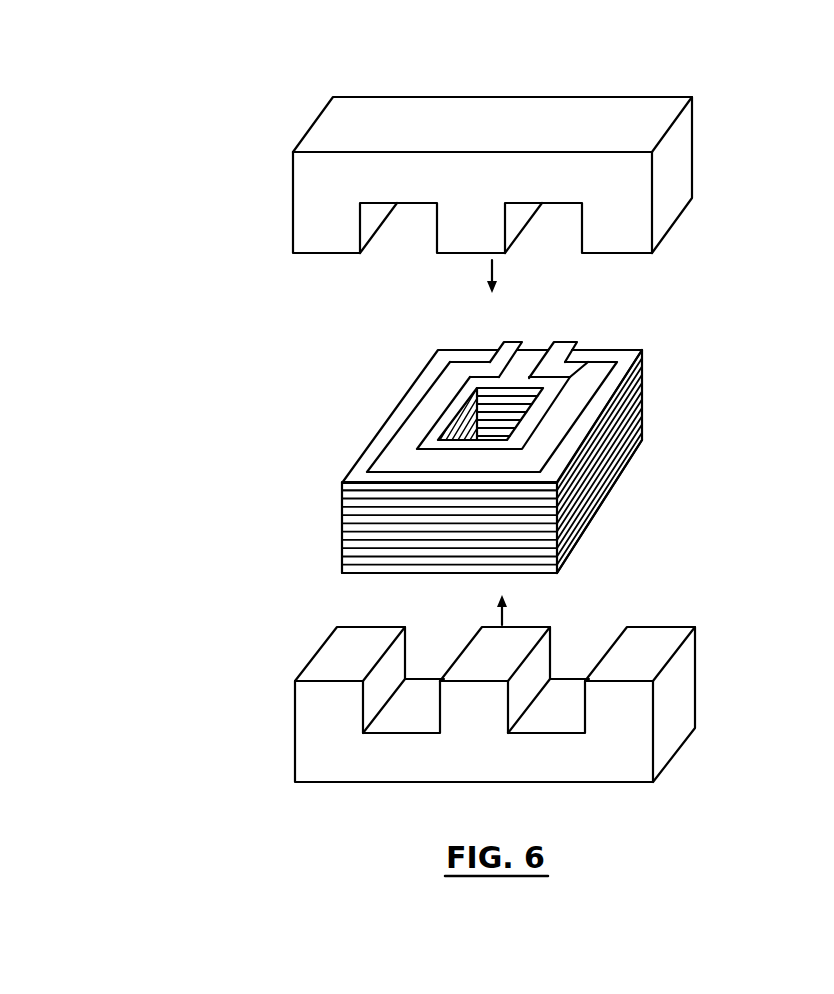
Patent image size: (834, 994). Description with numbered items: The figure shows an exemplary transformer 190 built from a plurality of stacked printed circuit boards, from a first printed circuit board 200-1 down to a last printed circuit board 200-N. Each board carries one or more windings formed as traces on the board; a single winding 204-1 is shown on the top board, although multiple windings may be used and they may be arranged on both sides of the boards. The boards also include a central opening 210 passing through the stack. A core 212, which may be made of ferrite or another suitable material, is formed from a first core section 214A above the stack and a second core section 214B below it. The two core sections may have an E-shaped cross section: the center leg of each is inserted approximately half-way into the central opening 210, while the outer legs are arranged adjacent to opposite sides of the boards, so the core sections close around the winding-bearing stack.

The transformer 190 is at (670, 346).
The printed circuit board 200-1 is at (378, 438).
The printed circuit board 200-N is at (342, 577).
The winding 204-1 is at (440, 383).
The central opening 210 is at (475, 390).
The core 212 is at (250, 95).
The first core section 214A is at (293, 177).
The second core section 214B is at (295, 732).